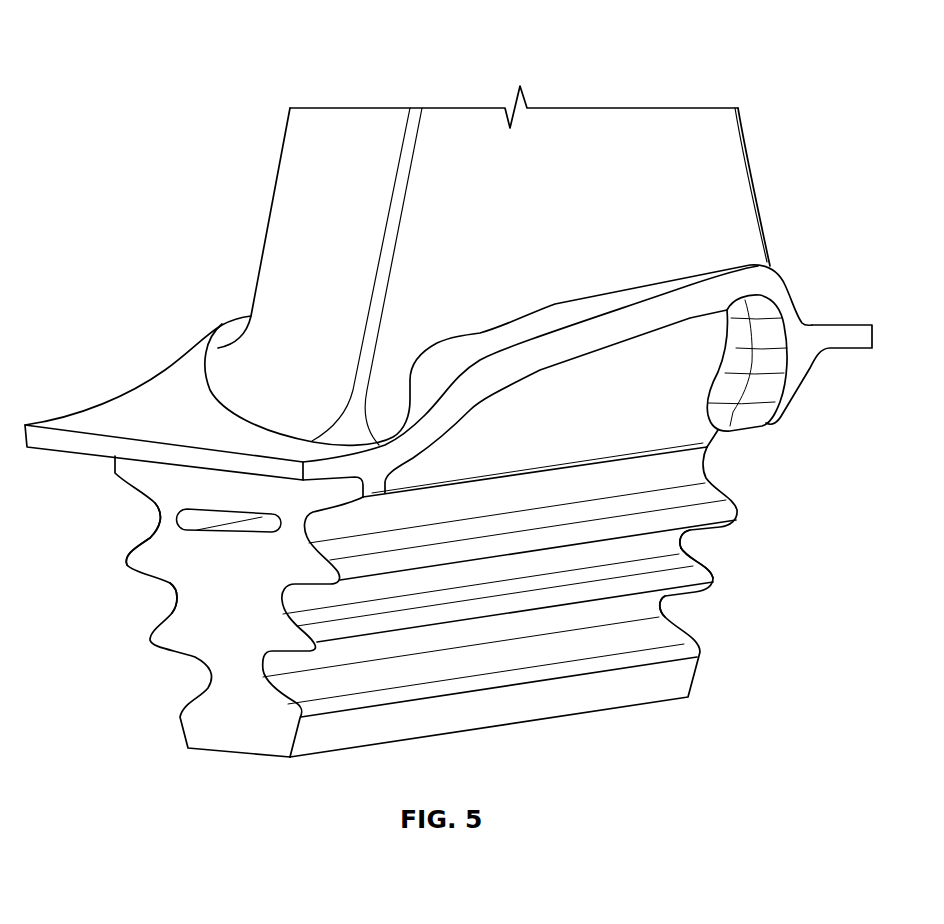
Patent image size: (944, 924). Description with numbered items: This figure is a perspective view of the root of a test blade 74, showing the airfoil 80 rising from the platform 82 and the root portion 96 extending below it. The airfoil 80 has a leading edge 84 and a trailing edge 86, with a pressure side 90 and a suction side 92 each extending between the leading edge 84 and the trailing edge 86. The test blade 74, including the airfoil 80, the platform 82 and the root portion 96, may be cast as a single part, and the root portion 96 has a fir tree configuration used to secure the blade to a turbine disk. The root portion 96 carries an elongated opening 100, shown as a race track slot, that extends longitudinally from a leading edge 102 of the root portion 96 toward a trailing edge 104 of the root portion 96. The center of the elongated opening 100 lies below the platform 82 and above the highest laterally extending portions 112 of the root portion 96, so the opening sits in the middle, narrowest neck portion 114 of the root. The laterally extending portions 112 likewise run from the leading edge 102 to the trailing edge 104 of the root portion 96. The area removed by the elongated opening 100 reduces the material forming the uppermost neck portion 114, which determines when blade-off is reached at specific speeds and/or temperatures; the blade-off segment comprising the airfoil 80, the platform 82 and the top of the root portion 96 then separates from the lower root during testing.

The test blade 74 is at (792, 45).
The airfoil 80 is at (658, 223).
The platform 82 is at (127, 418).
The leading edge 84 is at (365, 297).
The trailing edge 86 is at (757, 197).
The pressure side 90 is at (610, 154).
The suction side 92 is at (300, 193).
The root portion 96 is at (212, 710).
The elongated opening 100 is at (235, 528).
The leading edge of the root portion 102 is at (193, 612).
The trailing edge of the root portion 104 is at (712, 572).
The laterally extending portions 112 is at (128, 552).
The neck portion 114 is at (157, 533).